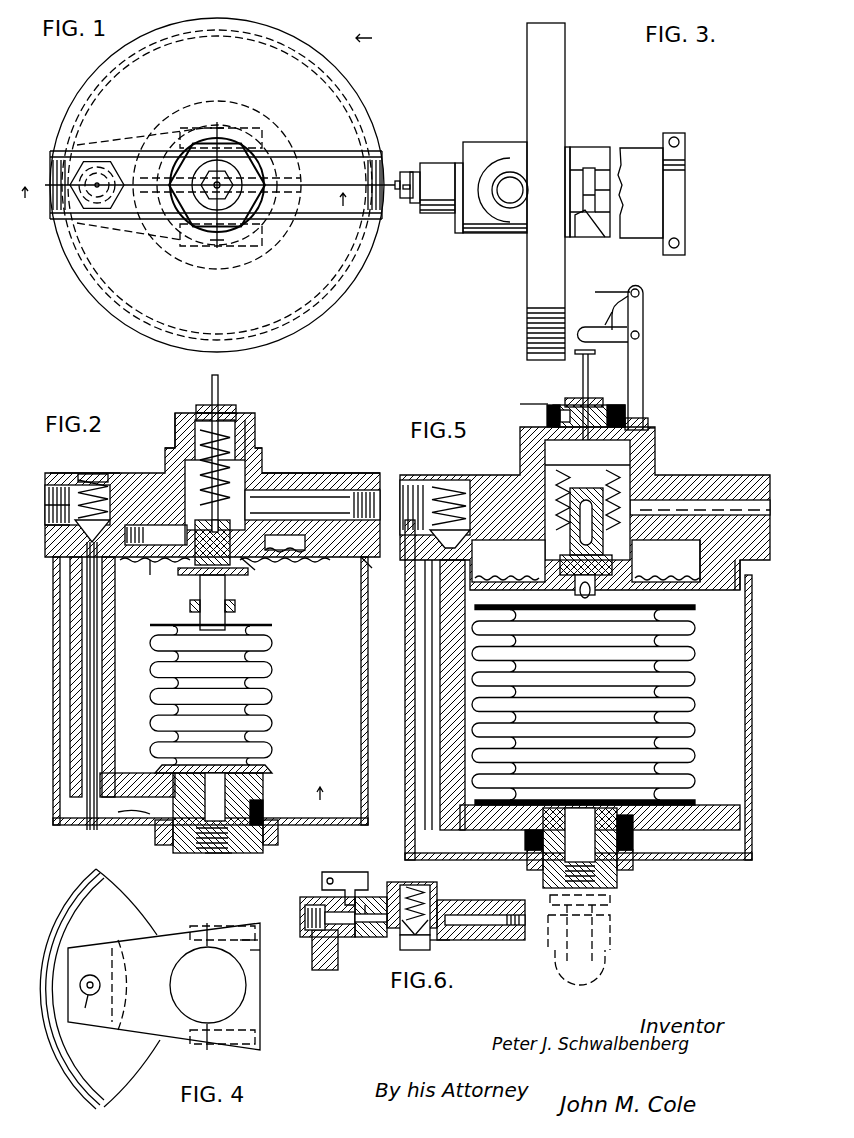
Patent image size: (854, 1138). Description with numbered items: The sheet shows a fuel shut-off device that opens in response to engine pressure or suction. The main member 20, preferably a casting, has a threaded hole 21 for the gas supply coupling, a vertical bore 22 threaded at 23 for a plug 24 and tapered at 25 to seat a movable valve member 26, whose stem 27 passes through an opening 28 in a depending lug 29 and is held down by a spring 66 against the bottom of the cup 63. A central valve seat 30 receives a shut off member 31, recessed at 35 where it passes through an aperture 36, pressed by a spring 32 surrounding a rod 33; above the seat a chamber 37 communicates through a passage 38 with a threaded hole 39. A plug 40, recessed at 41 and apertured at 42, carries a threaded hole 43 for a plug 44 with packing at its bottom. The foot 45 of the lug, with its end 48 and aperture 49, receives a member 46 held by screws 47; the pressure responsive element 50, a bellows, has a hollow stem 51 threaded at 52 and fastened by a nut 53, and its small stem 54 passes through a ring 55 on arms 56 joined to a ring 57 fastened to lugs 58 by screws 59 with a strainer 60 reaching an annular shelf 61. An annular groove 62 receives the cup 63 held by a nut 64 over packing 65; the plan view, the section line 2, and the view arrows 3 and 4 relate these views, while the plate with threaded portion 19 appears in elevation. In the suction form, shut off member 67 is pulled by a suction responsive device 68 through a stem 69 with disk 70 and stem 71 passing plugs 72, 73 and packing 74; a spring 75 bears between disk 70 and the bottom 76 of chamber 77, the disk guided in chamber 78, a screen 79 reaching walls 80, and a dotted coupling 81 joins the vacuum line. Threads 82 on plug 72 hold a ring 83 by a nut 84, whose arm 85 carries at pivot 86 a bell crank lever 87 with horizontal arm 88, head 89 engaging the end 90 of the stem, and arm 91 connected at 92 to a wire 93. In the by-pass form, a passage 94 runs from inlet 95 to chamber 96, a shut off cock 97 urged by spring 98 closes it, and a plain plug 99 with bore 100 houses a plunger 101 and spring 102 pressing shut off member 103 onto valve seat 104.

In FIG. 1, the section line 2- 2 is at (206, 201).
In FIG. 1, the arrow 3 is at (374, 42).
In FIG. 2, the arrow 4 is at (327, 802).
In FIG. 3, the threaded portion of plate 19 is at (674, 182).
In FIG. 1, the main member 20 is at (217, 185).
In FIG. 3, the main member 20 is at (546, 191).
In FIG. 2, the main member 20 is at (350, 473).
In FIG. 1, the threaded hole 21 is at (50, 167).
In FIG. 2, the threaded hole 21 is at (46, 500).
In FIG. 2, the vertical bore 22 is at (132, 480).
In FIG. 2, the threads 23 is at (56, 472).
In FIG. 1, the plug 24 is at (110, 160).
In FIG. 2, the plug 24 is at (104, 478).
In FIG. 2, the tapered valve seat 25 is at (75, 532).
In FIG. 2, the movable valve member 26 is at (46, 520).
In FIG. 2, the valve stem 27 is at (86, 570).
In FIG. 4, the valve stem 27 is at (79, 1010).
In FIG. 2, the opening 28 is at (90, 588).
In FIG. 4, the opening 28 is at (100, 972).
In FIG. 3, the depending lug 29 is at (640, 193).
In FIG. 2, the depending lug 29 is at (116, 604).
In FIG. 2, the valve seat 30 is at (262, 505).
In FIG. 3, the shut off member 31 is at (590, 237).
In FIG. 2, the shut off member 31 is at (225, 567).
In FIG. 2, the spring 32 is at (262, 450).
In FIG. 2, the rod 33 is at (219, 382).
In FIG. 1, the recess 35 is at (195, 182).
In FIG. 2, the recess 35 is at (187, 539).
In FIG. 2, the aperture 36 is at (142, 540).
In FIG. 2, the chamber 37 is at (172, 448).
In FIG. 1, the passage 38 is at (338, 180).
In FIG. 2, the passage 38 is at (312, 503).
In FIG. 1, the threaded hole 39 is at (378, 165).
In FIG. 3, the threaded hole 39 is at (518, 185).
In FIG. 2, the threaded hole 39 is at (378, 490).
In FIG. 1, the plug 40 is at (250, 142).
In FIG. 3, the plug 40 is at (460, 232).
In FIG. 2, the plug 40 is at (264, 468).
In FIG. 2, the recess 41 is at (248, 440).
In FIG. 4, the recess 41 is at (250, 930).
In FIG. 2, the aperture 42 is at (178, 432).
In FIG. 2, the threaded hole 43 is at (232, 410).
In FIG. 1, the plug 44 is at (205, 190).
In FIG. 3, the plug 44 is at (416, 206).
In FIG. 2, the plug 44 is at (204, 405).
In FIG. 3, the foot 45 is at (685, 210).
In FIG. 4, the foot 45 is at (164, 988).
In FIG. 1, the member 46 is at (268, 245).
In FIG. 2, the member 46 is at (265, 780).
In FIG. 4, the member 46 is at (262, 950).
In FIG. 4, the screws 47 is at (245, 1048).
In FIG. 3, the right hand end 48 is at (685, 148).
In FIG. 4, the right hand end 48 is at (205, 928).
In FIG. 4, the aperture 49 is at (208, 985).
In FIG. 2, the pressure responsive element 50 is at (275, 643).
In FIG. 3, the hollow stem 51 is at (600, 195).
In FIG. 2, the hollow stem 51 is at (268, 768).
In FIG. 2, the threads 52 is at (262, 848).
In FIG. 2, the nut 53 is at (264, 808).
In FIG. 2, the small stem 54 is at (226, 610).
In FIG. 3, the ring 55 is at (608, 147).
In FIG. 2, the ring 55 is at (191, 604).
In FIG. 2, the arms 56 is at (180, 572).
In FIG. 3, the ring 57 is at (568, 147).
In FIG. 2, the ring 57 is at (270, 565).
In FIG. 1, the lugs 58 is at (216, 140).
In FIG. 2, the lugs 58 is at (285, 542).
In FIG. 1, the screws 59 is at (221, 185).
In FIG. 2, the screws 59 is at (256, 572).
In FIG. 2, the strainer 60 is at (155, 578).
In FIG. 2, the annular shelf 61 is at (155, 569).
In FIG. 1, the annular groove 62 is at (78, 245).
In FIG. 2, the annular groove 62 is at (370, 560).
In FIG. 4, the annular groove 62 is at (70, 905).
In FIG. 2, the cup 63 is at (53, 705).
In FIG. 2, the nut 64 is at (279, 832).
In FIG. 2, the packing 65 is at (140, 818).
In FIG. 2, the threads / spring 66 is at (86, 472).
In FIG. 5, the shut off member 67 is at (572, 580).
In FIG. 5, the suction responsive device 68 is at (703, 664).
In FIG. 5, the stem 69 is at (587, 487).
In FIG. 5, the disk 70 is at (640, 420).
In FIG. 5, the stem 71 is at (590, 385).
In FIG. 5, the plug 72 is at (656, 436).
In FIG. 5, the plug 73 is at (603, 400).
In FIG. 5, the packing 74 is at (558, 410).
In FIG. 5, the spring 75 is at (622, 510).
In FIG. 5, the chamber bottom 76 is at (545, 552).
In FIG. 5, the chamber 77 is at (512, 482).
In FIG. 5, the chamber 78 is at (542, 415).
In FIG. 5, the screen 79 is at (587, 569).
In FIG. 5, the walls 80 is at (709, 565).
In FIG. 5, the coupling 81 is at (612, 905).
In FIG. 5, the threads 82 is at (625, 410).
In FIG. 5, the ring 83 is at (650, 428).
In FIG. 5, the nut 84 is at (524, 405).
In FIG. 5, the upstanding arm 85 is at (644, 352).
In FIG. 5, the pivot 86 is at (640, 333).
In FIG. 5, the bell crank lever 87 is at (629, 313).
In FIG. 5, the horizontal arm 88 is at (605, 315).
In FIG. 5, the head 89 is at (589, 327).
In FIG. 5, the stem end 90 is at (576, 355).
In FIG. 5, the arm 91 is at (645, 300).
In FIG. 5, the connection 92 is at (638, 290).
In FIG. 5, the wire 93 is at (617, 292).
In FIG. 6, the passage 94 is at (362, 938).
In FIG. 6, the inlet 95 is at (316, 933).
In FIG. 6, the chamber 96 is at (380, 938).
In FIG. 6, the shut off cock 97 is at (345, 878).
In FIG. 6, the spring 98 is at (368, 900).
In FIG. 6, the plug 99 is at (435, 888).
In FIG. 6, the bore 100 is at (412, 898).
In FIG. 6, the plunger 101 is at (448, 906).
In FIG. 6, the spring 102 is at (425, 890).
In FIG. 6, the shut off member 103 is at (416, 948).
In FIG. 6, the valve seat 104 is at (447, 942).